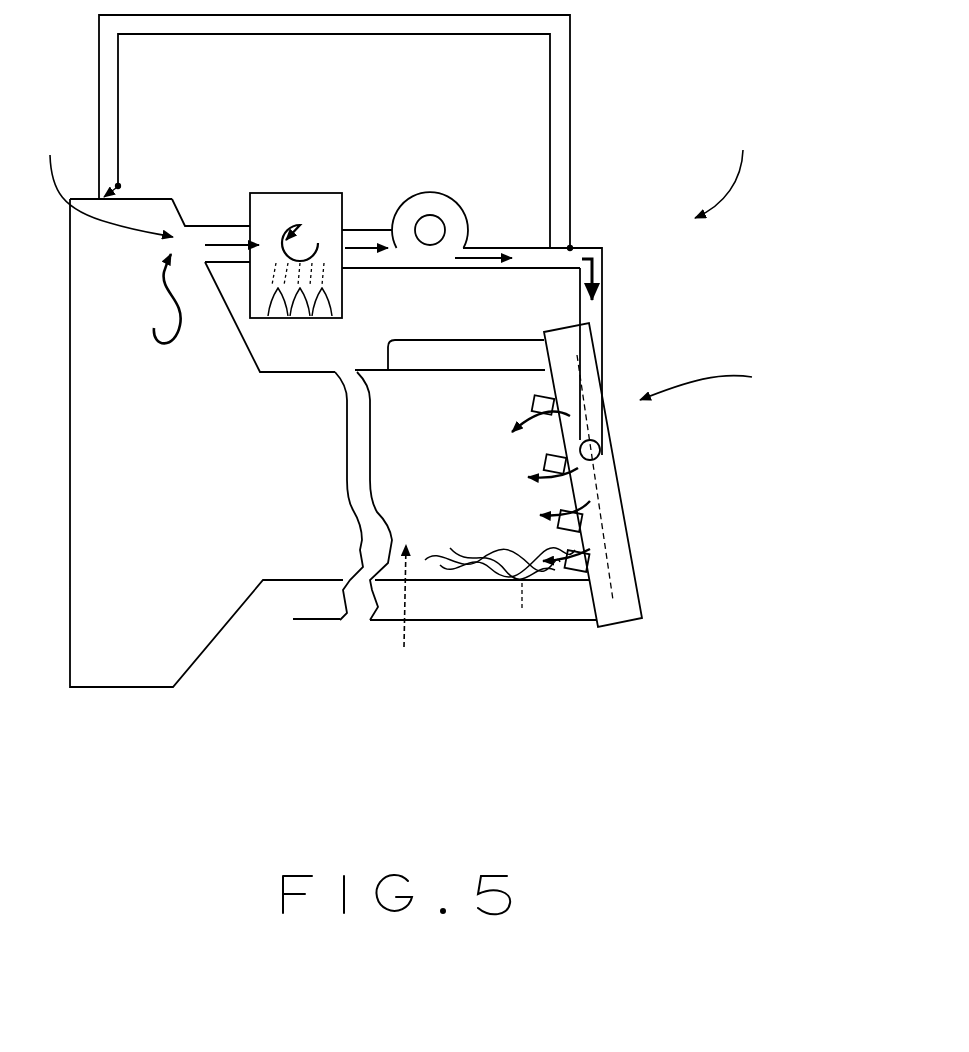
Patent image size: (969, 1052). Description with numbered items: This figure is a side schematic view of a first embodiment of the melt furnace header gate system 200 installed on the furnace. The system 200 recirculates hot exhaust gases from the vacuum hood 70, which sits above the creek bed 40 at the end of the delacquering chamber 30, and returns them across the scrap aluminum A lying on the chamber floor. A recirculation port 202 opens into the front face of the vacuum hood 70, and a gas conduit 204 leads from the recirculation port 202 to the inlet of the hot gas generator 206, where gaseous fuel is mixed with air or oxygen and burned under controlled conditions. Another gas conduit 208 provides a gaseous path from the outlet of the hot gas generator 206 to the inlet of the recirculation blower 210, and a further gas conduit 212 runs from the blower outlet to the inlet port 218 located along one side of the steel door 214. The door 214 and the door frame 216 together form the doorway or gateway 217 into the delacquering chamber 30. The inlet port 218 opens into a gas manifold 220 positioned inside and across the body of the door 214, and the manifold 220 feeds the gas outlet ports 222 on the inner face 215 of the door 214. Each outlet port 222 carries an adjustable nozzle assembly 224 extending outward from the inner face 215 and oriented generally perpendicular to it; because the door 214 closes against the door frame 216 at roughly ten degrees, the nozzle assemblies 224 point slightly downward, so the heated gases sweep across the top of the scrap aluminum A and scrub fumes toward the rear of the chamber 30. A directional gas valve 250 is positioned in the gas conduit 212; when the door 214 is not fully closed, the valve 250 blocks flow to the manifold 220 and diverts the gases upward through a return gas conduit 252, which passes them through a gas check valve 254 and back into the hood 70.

The melt furnace header gate system 200 is at (731, 167).
The recirculation port 202 is at (99, 181).
The gas conduit 204 is at (225, 227).
The hot gas generator 206 is at (296, 193).
The gas conduit 208 is at (370, 230).
The recirculation blower 210 is at (437, 193).
The gas conduit 212 is at (569, 248).
The steel gate or door 214 is at (637, 583).
The inner face 215 is at (537, 391).
The door frame 216 is at (544, 353).
The doorway or gateway 217 is at (718, 380).
The inlet port 218 is at (603, 457).
The gas manifold 220 is at (603, 592).
The gas outlet ports 222 is at (558, 455).
The adjustable nozzle assembly 224 is at (557, 519).
The directional gas valve 250 is at (544, 242).
The return gas conduit 252 is at (562, 74).
The gas check valve 254 is at (130, 190).
The vacuum hood 70 is at (142, 303).
The delacquering chamber 30 is at (404, 647).
The creek bed 40 is at (151, 687).
The scrap aluminum A is at (500, 573).